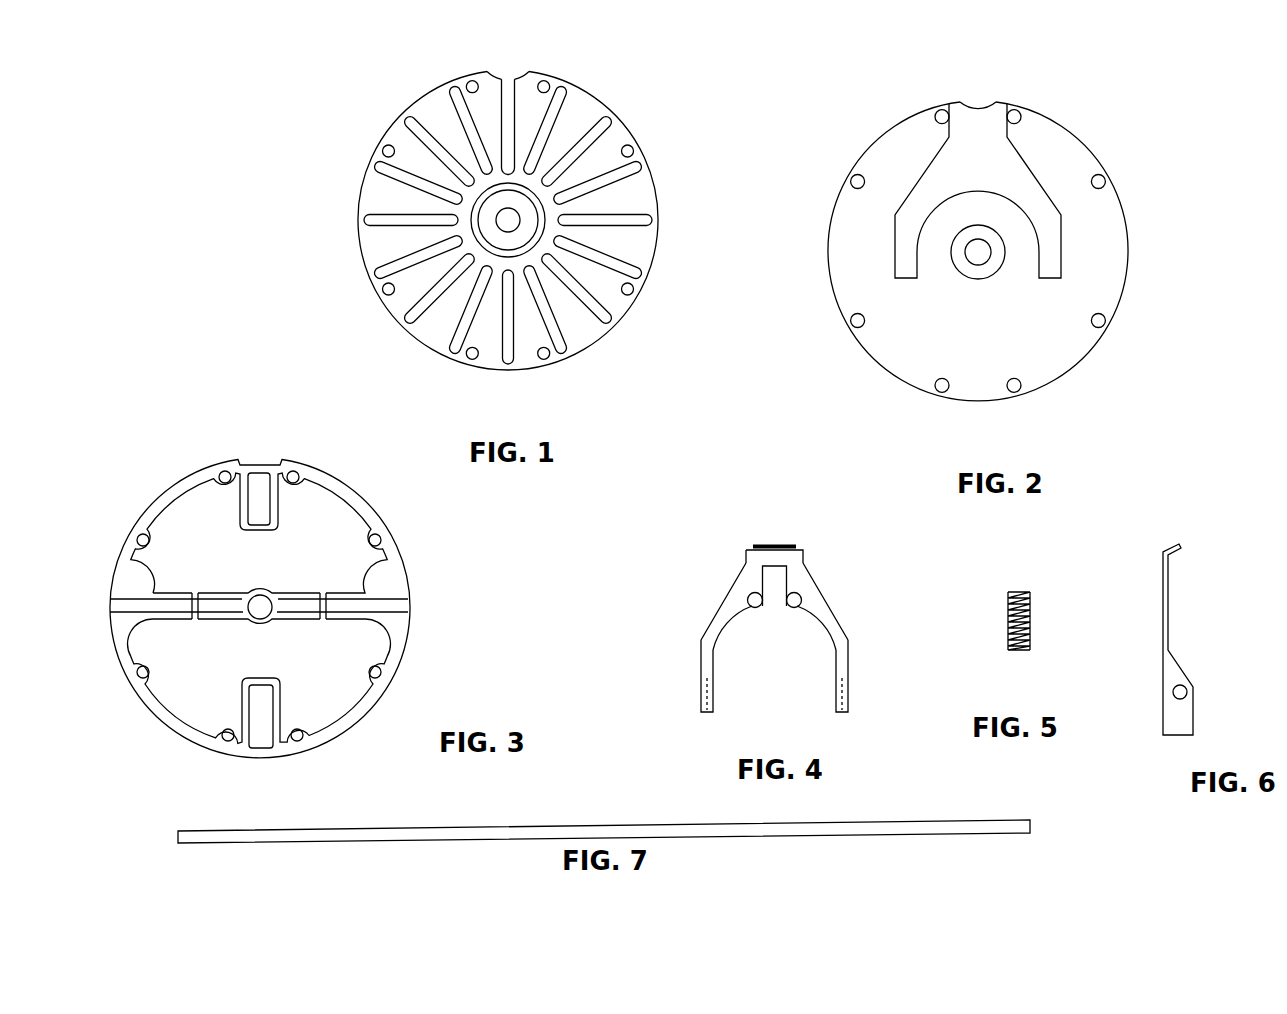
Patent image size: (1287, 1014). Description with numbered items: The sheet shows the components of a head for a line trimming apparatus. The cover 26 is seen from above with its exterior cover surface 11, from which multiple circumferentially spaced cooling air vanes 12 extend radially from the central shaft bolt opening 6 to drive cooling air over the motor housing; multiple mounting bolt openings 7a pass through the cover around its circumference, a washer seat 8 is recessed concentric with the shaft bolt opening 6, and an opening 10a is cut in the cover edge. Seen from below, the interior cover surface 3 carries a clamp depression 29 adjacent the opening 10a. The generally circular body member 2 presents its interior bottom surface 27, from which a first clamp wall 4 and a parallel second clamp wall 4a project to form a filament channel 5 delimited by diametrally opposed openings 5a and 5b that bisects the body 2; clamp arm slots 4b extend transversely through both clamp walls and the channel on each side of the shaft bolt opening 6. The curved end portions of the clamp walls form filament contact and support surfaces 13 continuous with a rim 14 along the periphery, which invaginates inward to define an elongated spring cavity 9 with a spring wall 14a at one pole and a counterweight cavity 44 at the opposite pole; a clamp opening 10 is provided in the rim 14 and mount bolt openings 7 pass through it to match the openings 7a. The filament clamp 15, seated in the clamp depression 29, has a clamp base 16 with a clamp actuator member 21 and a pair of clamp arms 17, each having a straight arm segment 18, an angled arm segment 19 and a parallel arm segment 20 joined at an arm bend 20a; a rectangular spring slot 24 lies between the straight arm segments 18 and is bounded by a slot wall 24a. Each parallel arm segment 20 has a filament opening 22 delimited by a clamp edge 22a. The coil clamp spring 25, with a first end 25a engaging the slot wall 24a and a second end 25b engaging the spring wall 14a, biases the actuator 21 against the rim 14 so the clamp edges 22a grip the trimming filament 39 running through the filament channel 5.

In FIG. 3, the body member 2 is at (255, 605).
In FIG. 2, the interior cover surface 3 is at (985, 233).
In FIG. 3, the first clamp wall 4 is at (281, 603).
In FIG. 3, the second clamp wall 4a is at (190, 597).
In FIG. 3, the clamp arm slots 4b is at (200, 597).
In FIG. 3, the filament channel 5 is at (114, 612).
In FIG. 3, the opening 5a is at (112, 612).
In FIG. 3, the opening 5b is at (372, 605).
In FIG. 1, the shaft bolt opening 6 is at (497, 222).
In FIG. 2, the shaft bolt opening 6 is at (980, 253).
In FIG. 3, the shaft bolt opening 6 is at (263, 612).
In FIG. 3, the mount bolt openings 7 is at (221, 472).
In FIG. 1, the mounting bolt openings 7a is at (469, 82).
In FIG. 2, the mounting bolt openings 7a is at (938, 111).
In FIG. 1, the washer seats 8 is at (536, 204).
In FIG. 2, the washer seats 8 is at (966, 266).
In FIG. 3, the spring cavity 9 is at (262, 508).
In FIG. 3, the clamp opening 10 is at (255, 460).
In FIG. 1, the opening 10a is at (512, 66).
In FIG. 2, the opening 10a is at (983, 96).
In FIG. 1, the exterior cover surface 11 is at (422, 117).
In FIG. 1, the cooling air vanes 12 is at (442, 84).
In FIG. 3, the filament contact and support surface 13 is at (130, 585).
In FIG. 3, the rim 14 is at (165, 490).
In FIG. 3, the spring wall 14a is at (248, 533).
In FIG. 4, the filament clamp 15 is at (760, 612).
In FIG. 6, the filament clamp 15 is at (1176, 622).
In FIG. 4, the clamp base 16 is at (781, 558).
In FIG. 6, the clamp base 16 is at (1162, 553).
In FIG. 4, the clamp arms 17 is at (726, 607).
In FIG. 6, the clamp arms 17 is at (1170, 593).
In FIG. 4, the straight arm segment 18 is at (748, 578).
In FIG. 6, the straight arm segment 18 is at (1167, 573).
In FIG. 4, the angled arm segment 19 is at (727, 615).
In FIG. 4, the parallel arm segment 20 is at (823, 707).
In FIG. 6, the parallel arm segment 20 is at (1173, 728).
In FIG. 4, the arm bend 20a is at (698, 641).
In FIG. 6, the arm bend 20a is at (1167, 650).
In FIG. 4, the clamp actuator member 21 is at (766, 546).
In FIG. 6, the clamp actuator member 21 is at (1180, 540).
In FIG. 4, the filament opening 22 is at (702, 690).
In FIG. 6, the filament opening 22 is at (1186, 690).
In FIG. 6, the clamp edge 22a is at (1187, 700).
In FIG. 4, the spring slot 24 is at (772, 598).
In FIG. 4, the slot wall 24a is at (761, 572).
In FIG. 5, the clamp spring 25 is at (983, 622).
In FIG. 5, the first end 25a is at (1015, 591).
In FIG. 5, the second end 25b is at (1015, 651).
In FIG. 1, the cover 26 is at (604, 88).
In FIG. 2, the cover 26 is at (878, 130).
In FIG. 3, the interior bottom surface 27 is at (279, 577).
In FIG. 2, the clamp depression 29 is at (892, 256).
In FIG. 7, the trimming filament 39 is at (940, 827).
In FIG. 3, the counterweight cavity 44 is at (260, 722).